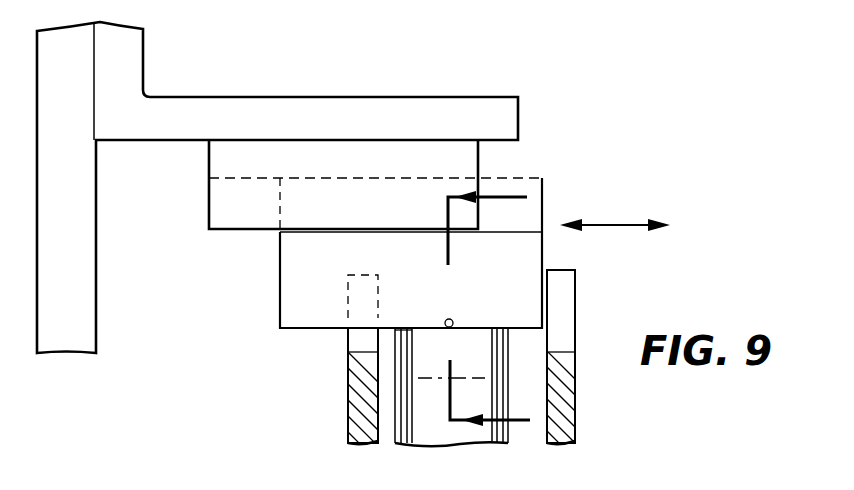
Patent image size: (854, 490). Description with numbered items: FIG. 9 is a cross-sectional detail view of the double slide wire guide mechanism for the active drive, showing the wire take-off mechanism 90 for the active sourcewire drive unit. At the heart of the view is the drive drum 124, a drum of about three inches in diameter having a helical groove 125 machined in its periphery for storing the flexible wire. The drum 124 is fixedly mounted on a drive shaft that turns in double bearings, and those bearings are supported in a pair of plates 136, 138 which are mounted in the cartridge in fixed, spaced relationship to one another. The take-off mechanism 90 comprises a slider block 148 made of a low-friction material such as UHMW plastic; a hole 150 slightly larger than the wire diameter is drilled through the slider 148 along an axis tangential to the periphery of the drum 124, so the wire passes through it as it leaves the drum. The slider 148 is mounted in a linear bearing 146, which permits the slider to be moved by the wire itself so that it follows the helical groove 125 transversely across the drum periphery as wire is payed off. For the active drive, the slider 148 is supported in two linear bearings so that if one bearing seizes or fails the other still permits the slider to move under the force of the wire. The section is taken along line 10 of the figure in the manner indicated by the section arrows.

The section line 10- 10 is at (471, 311).
The wire take-off mechanism 90 is at (645, 275).
The drive drum 124 is at (417, 442).
The helical groove 125 is at (401, 328).
The plate 136 is at (361, 398).
The plate 138 is at (567, 408).
The linear bearing 146 is at (532, 153).
The slider block 148 is at (298, 258).
The hole 150 is at (452, 319).